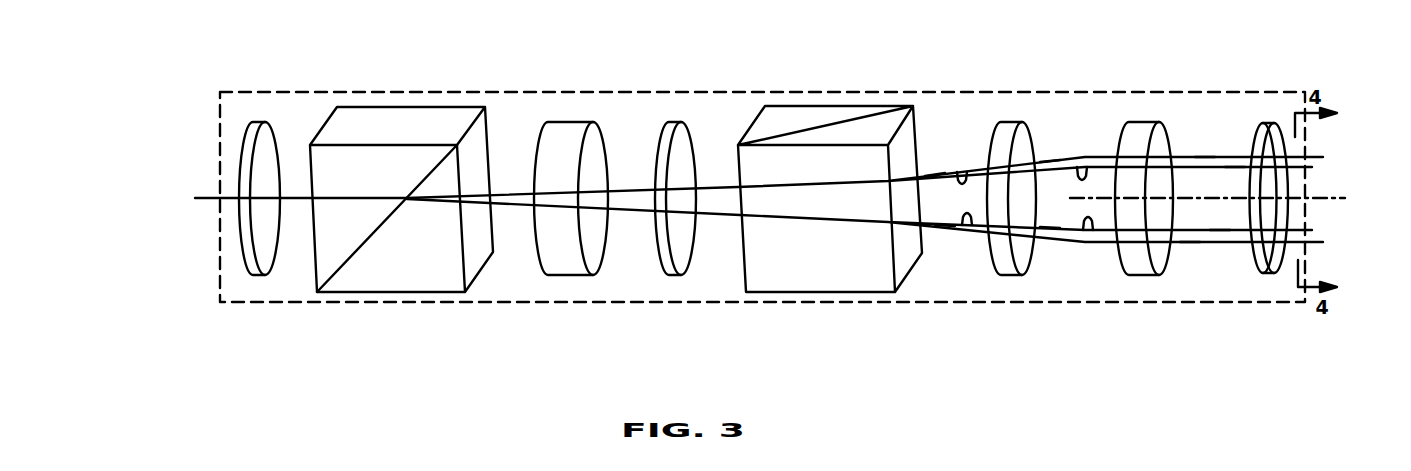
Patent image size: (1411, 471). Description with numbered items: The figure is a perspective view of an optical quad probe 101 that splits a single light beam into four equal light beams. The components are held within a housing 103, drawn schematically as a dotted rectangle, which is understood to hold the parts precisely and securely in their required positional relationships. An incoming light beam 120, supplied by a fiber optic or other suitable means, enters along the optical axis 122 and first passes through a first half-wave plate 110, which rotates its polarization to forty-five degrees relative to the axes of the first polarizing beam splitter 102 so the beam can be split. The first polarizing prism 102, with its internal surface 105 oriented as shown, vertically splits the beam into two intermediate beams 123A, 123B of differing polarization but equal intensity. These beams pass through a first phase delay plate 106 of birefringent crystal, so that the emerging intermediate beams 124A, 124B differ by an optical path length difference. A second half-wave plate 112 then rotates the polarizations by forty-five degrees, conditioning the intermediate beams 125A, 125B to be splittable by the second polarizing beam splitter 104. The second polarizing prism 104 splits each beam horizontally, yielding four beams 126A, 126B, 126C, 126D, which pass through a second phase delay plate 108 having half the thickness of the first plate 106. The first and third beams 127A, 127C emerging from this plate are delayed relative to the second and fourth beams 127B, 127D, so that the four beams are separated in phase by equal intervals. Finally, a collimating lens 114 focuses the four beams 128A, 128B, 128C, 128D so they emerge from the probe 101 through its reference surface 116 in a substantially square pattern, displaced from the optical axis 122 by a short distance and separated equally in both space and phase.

The optical quad probe 101 is at (207, 387).
The first polarizing beam splitter 102 is at (407, 107).
The housing 103 is at (297, 303).
The second polarizing beam splitter 104 is at (830, 106).
The internal surface 105 is at (376, 230).
The first phase delay plate 106 is at (577, 122).
The second phase delay plate 108 is at (1010, 122).
The first half-wave plate 110 is at (263, 122).
The second half-wave plate 112 is at (667, 130).
The collimating lens 114 is at (1145, 122).
The reference surface 116 is at (1280, 213).
The light beam 120 is at (196, 198).
The optical axis 122 is at (1347, 198).
The first intermediate beam 123A is at (515, 198).
The second intermediate beam 123B is at (515, 198).
The first intermediate beam 124A is at (630, 209).
The second intermediate beam 124B is at (630, 209).
The first intermediate beam 125A is at (722, 206).
The second intermediate beam 125B is at (722, 206).
The first beam 126A is at (945, 228).
The second beam 126B is at (935, 172).
The third beam 126C is at (965, 172).
The fourth beam 126D is at (968, 222).
The first beam 127A is at (1048, 232).
The second beam 127B is at (1085, 170).
The third beam 127C is at (1048, 157).
The fourth beam 127D is at (1089, 230).
The first output beam 128A is at (1187, 243).
The second output beam 128B is at (1232, 167).
The third output beam 128C is at (1202, 155).
The fourth output beam 128D is at (1217, 230).